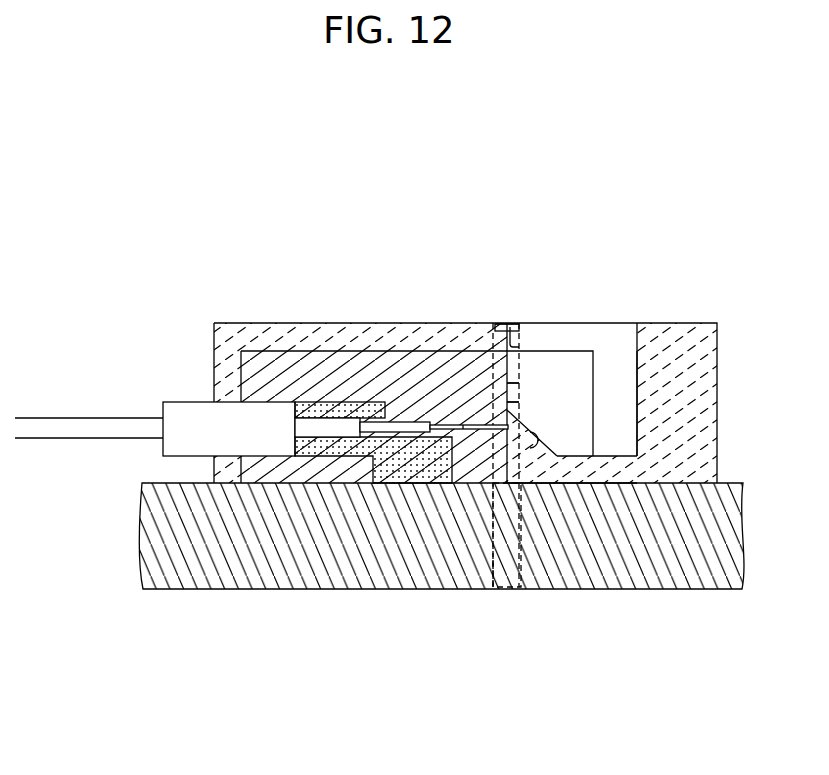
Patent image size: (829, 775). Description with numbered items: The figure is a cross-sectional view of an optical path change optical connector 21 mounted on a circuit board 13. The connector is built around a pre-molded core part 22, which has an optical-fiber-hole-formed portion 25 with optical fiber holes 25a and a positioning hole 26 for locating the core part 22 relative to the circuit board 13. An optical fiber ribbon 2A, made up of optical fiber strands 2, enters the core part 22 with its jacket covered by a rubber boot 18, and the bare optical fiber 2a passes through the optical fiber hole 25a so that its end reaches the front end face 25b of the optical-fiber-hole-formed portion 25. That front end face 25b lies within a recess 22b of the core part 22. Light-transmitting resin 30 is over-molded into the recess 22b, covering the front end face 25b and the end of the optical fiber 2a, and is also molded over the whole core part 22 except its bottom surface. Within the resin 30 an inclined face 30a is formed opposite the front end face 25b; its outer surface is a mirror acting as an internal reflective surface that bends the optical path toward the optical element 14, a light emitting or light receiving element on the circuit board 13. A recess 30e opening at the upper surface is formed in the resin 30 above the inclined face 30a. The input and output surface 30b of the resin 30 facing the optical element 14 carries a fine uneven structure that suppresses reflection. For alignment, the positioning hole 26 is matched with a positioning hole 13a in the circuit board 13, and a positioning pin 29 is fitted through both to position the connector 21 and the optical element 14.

The optical fiber ribbon 2A is at (31, 425).
The rubber boot 18 is at (177, 405).
The core part 22 is at (270, 350).
The light-transmitting resin 30 is at (322, 340).
The optical path change optical connector 21 is at (380, 180).
The optical fiber strand 2 is at (398, 421).
The optical fiber (bare fiber) 2a is at (463, 423).
The optical-fiber-hole-formed portion 25 is at (477, 368).
The positioning pin 29 is at (505, 324).
The positioning hole 26 is at (518, 330).
The front end face of the optical-fiber-hole-formed portion 25b is at (508, 403).
The recess 22b is at (508, 383).
The recess of the light-transmitting resin 30e is at (637, 392).
The inclined face (internal reflective surface) 30a is at (548, 446).
The circuit board 13 is at (345, 562).
The optical fiber hole 25a is at (473, 437).
The positioning hole of the circuit board 13a is at (502, 560).
The optical element 14 is at (530, 470).
The input and output surface 30b is at (568, 470).